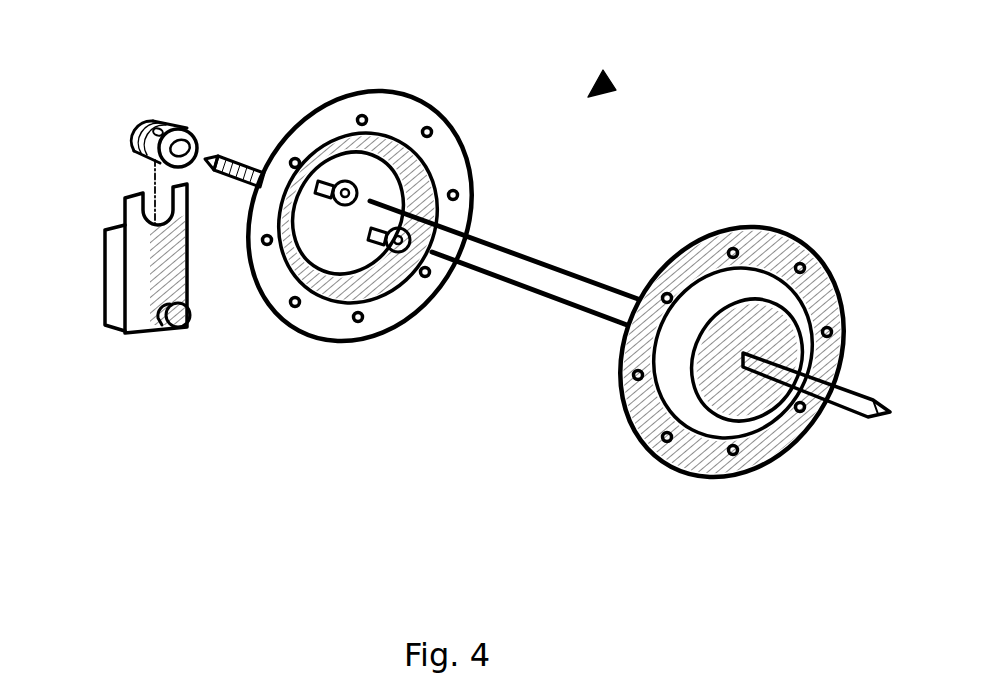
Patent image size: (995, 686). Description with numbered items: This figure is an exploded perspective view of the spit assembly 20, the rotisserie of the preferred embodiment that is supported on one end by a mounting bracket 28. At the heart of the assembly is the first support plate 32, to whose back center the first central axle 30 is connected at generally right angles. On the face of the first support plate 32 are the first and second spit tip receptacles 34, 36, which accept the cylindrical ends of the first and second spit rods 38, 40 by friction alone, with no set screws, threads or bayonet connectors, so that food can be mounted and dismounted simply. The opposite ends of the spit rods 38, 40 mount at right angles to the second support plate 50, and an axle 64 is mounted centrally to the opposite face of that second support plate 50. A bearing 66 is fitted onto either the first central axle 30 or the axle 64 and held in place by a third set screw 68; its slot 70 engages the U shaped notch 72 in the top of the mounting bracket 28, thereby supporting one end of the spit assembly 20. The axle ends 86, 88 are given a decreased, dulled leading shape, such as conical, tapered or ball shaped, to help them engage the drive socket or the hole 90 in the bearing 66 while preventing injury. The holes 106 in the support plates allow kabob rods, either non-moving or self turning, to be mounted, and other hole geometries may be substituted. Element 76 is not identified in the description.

The spit assembly 20 is at (610, 77).
The mounting bracket 28 is at (132, 328).
The first central axle 30 is at (227, 176).
The first support plate 32 is at (437, 110).
The first spit tip receptacle 34 is at (320, 262).
The second spit tip receptacle 36 is at (382, 250).
The first spit rod 38 is at (458, 272).
The second spit rod 40 is at (507, 278).
The second support plate 50 is at (752, 432).
The axle 64 is at (800, 432).
The bearing 66 is at (192, 127).
The third set screw 68 is at (158, 132).
The slot 70 is at (150, 117).
The U shaped notch 72 is at (153, 197).
The pin 76 is at (172, 322).
The axle end 86 is at (213, 175).
The axle end 88 is at (873, 418).
The hole 90 is at (203, 157).
The holes 106 is at (295, 163).